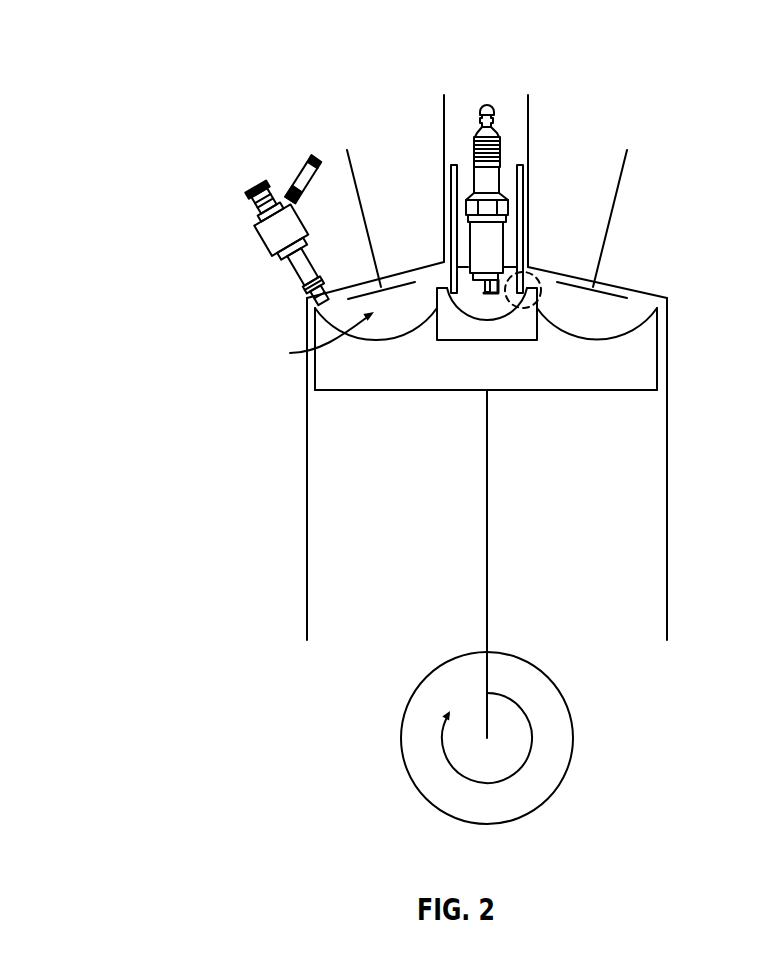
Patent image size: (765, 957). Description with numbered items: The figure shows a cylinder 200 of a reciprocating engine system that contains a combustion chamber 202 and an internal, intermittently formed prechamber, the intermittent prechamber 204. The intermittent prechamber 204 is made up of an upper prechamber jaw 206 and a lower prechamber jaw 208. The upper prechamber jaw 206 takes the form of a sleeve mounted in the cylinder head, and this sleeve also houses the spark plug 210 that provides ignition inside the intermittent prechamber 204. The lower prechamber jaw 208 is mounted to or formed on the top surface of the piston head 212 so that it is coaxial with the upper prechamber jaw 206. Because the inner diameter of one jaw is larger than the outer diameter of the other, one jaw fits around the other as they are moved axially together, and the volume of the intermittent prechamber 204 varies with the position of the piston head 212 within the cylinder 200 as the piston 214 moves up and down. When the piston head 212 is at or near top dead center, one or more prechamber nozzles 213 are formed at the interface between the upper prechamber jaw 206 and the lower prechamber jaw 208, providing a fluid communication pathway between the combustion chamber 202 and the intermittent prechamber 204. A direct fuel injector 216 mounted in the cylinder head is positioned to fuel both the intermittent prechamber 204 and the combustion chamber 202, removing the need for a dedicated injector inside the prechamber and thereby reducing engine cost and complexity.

The cylinder 200 is at (162, 51).
The combustion chamber 202 is at (310, 341).
The intermittent prechamber 204 is at (507, 327).
The upper prechamber jaw 206 is at (523, 176).
The lower prechamber jaw 208 is at (522, 335).
The spark plug 210 is at (500, 148).
The piston head 212 is at (417, 378).
The prechamber nozzles 213 is at (527, 272).
The piston 214 is at (489, 551).
The direct fuel injector 216 is at (265, 246).